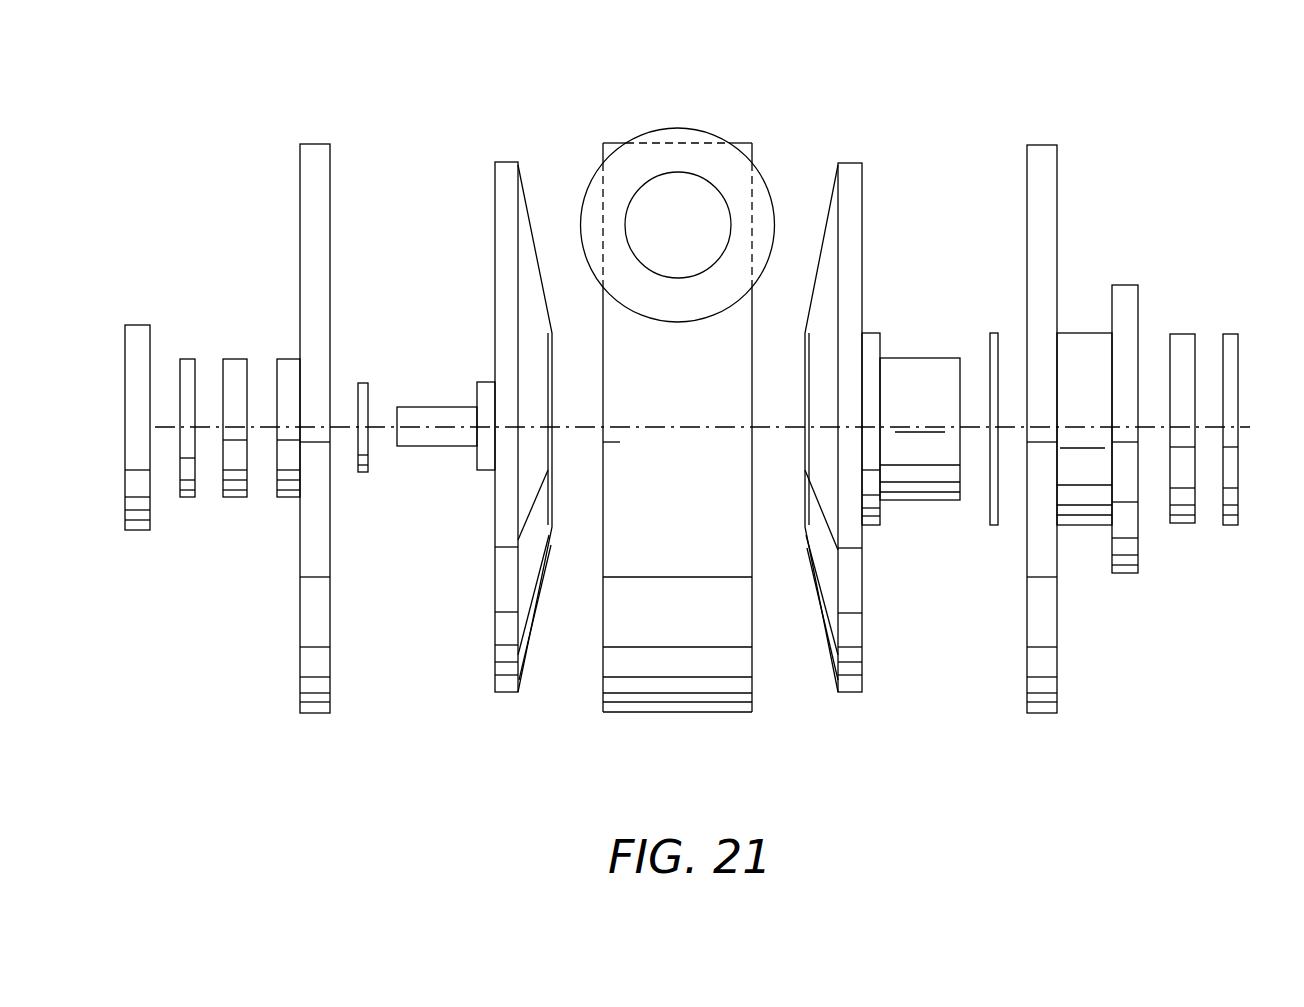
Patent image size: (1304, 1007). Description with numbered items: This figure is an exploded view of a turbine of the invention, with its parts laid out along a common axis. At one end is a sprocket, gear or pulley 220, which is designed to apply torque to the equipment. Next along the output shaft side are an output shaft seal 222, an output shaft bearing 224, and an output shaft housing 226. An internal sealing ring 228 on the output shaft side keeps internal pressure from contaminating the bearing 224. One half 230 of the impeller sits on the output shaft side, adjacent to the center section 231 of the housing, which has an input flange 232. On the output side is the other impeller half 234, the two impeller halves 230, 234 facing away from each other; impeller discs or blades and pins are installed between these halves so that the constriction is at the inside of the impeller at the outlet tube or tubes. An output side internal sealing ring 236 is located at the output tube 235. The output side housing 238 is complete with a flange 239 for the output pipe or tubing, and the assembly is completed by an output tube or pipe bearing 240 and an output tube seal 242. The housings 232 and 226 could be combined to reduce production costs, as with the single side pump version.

The sprocket, gear or pulley 220 is at (140, 325).
The output shaft seal 222 is at (186, 497).
The output shaft bearing 224 is at (236, 359).
The output shaft housing 226 is at (314, 144).
The internal sealing ring 228 is at (362, 383).
The impeller half 230 is at (506, 162).
The center section of the housing 231 is at (678, 714).
The input flange 232 is at (677, 128).
The impeller half 234 is at (848, 163).
The output tube 235 is at (918, 358).
The output side internal sealing ring 236 is at (993, 333).
The output side housing 238 is at (1040, 145).
The flange 239 is at (1125, 285).
The output tube or pipe bearing 240 is at (1182, 523).
The output tube seal 242 is at (1232, 334).